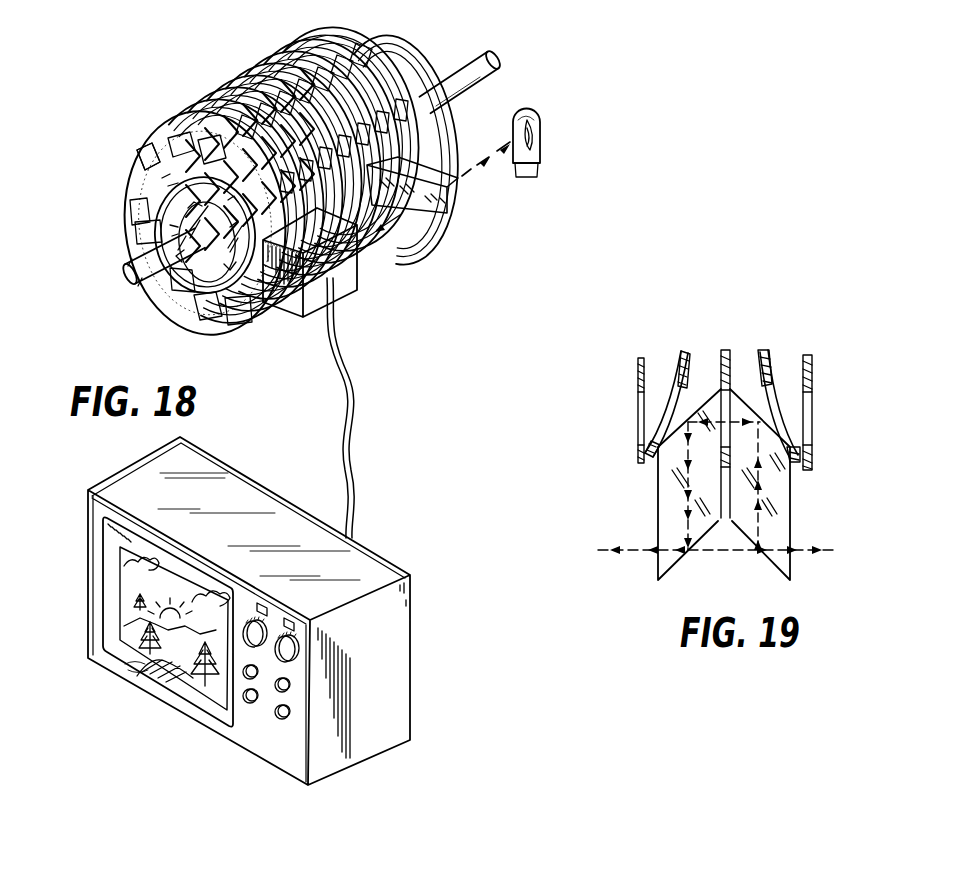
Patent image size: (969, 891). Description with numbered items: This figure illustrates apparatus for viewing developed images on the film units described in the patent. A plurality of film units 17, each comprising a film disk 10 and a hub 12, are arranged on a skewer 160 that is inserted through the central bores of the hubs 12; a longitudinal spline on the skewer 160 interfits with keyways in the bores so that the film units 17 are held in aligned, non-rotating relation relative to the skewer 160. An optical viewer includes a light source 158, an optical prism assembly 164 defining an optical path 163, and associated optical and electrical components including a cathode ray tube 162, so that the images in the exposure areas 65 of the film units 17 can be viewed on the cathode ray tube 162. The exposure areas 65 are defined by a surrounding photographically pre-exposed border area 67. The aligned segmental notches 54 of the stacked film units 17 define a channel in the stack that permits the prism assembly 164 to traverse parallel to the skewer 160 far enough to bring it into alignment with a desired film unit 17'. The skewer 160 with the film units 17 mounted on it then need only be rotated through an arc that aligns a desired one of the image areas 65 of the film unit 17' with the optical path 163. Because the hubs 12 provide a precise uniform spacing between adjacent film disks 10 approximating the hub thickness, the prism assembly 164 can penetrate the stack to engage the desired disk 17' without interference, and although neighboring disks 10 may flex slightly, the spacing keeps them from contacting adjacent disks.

In FIG. 18, the film disk 10 is at (160, 174).
In FIG. 19, the film disk 10 is at (800, 377).
In FIG. 18, the hub 12 is at (160, 212).
In FIG. 18, the film unit 17 is at (286, 184).
In FIG. 18, the desired film unit 17' is at (308, 27).
In FIG. 18, the segmental indentation 54 is at (403, 80).
In FIG. 18, the exposure areas 65 is at (173, 147).
In FIG. 19, the exposure areas 65 is at (637, 418).
In FIG. 18, the border area 67 is at (160, 177).
In FIG. 19, the border area 67 is at (638, 452).
In FIG. 18, the light source 158 is at (542, 134).
In FIG. 18, the skewer 160 is at (126, 285).
In FIG. 18, the cathode ray tube 162 is at (123, 615).
In FIG. 19, the optical path 163 is at (826, 548).
In FIG. 18, the optical prism assembly 164 is at (442, 202).
In FIG. 19, the optical prism assembly 164 is at (750, 547).